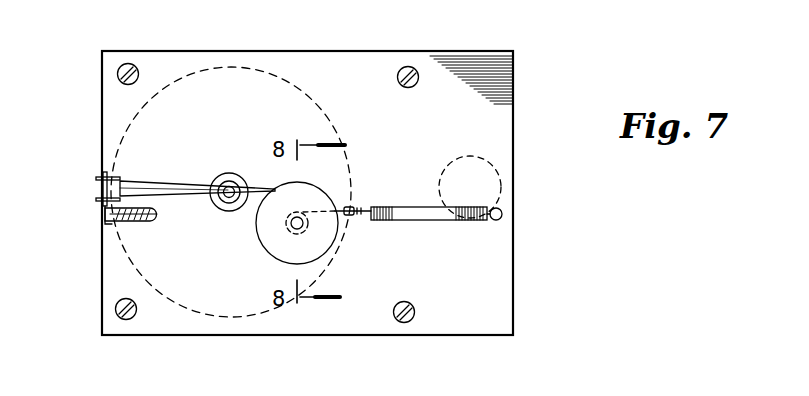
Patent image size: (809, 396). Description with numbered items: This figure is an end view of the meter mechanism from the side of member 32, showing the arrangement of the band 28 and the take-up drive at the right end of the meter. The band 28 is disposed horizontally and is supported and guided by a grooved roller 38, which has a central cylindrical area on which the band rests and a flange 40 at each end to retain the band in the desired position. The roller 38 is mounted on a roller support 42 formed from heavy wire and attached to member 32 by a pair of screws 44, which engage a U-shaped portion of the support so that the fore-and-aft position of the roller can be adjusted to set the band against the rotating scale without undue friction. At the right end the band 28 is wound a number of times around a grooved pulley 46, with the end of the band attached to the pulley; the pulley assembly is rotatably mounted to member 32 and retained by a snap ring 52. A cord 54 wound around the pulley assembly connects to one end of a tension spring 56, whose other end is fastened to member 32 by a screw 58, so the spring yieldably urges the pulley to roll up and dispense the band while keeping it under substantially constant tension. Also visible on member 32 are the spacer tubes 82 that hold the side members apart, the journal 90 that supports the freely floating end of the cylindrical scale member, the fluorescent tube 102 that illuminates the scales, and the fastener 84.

The band 28 is at (140, 188).
The member 32 is at (490, 298).
The grooved roller 38 is at (100, 177).
The flange 40 is at (96, 180).
The roller support 42 is at (118, 212).
The screws 44 is at (127, 220).
The grooved pulley 46 is at (283, 262).
The snap ring 52 is at (307, 230).
The cord 54 is at (348, 207).
The tension spring 56 is at (420, 222).
The screw 58 is at (500, 219).
The spacer tube 82 is at (117, 72).
The mounting screw 84 is at (410, 67).
The journal 90 is at (228, 175).
The fluorescent tube 102 is at (490, 178).